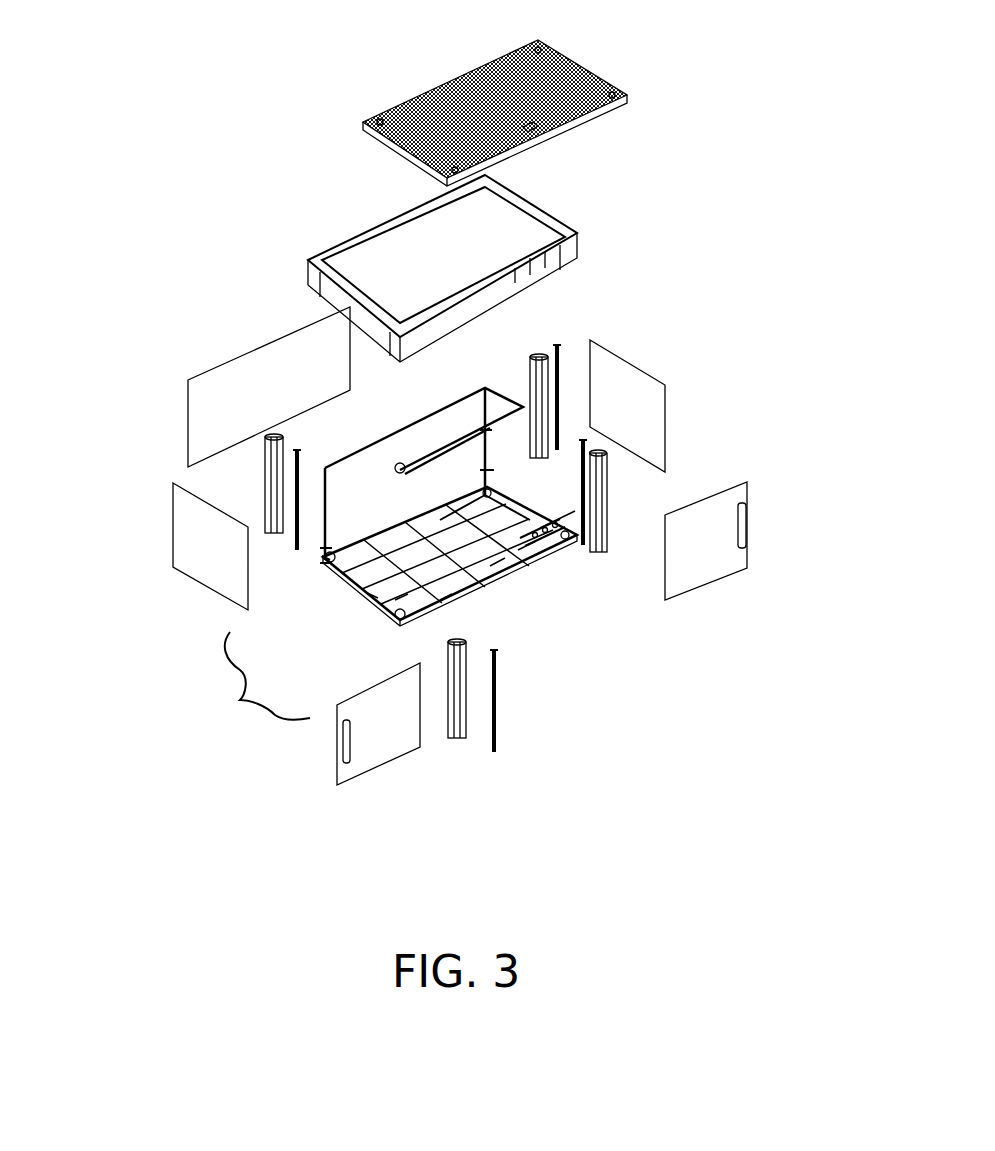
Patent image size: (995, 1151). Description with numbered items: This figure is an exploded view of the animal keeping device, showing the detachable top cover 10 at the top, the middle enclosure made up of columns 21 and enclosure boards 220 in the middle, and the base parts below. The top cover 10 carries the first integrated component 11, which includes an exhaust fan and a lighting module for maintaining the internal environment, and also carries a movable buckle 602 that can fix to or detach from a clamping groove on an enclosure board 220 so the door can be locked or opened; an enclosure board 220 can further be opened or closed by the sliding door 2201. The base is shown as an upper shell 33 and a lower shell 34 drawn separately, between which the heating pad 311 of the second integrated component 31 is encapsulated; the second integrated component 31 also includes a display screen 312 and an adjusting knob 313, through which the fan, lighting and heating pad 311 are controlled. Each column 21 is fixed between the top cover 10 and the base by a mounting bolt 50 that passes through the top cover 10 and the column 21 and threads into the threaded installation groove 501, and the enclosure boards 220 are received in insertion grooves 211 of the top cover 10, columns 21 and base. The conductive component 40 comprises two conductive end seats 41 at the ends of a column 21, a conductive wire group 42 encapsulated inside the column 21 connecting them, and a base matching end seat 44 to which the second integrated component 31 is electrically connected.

The top cover 10 is at (590, 63).
The movable buckle 602 is at (548, 136).
The upper shell of base 33 is at (570, 202).
The first integrated component 11 is at (437, 450).
The second integrated component 31 is at (647, 598).
The heating pad 311 is at (545, 545).
The display screen 312 is at (495, 580).
The adjusting knob 313 is at (530, 560).
The insertion groove 211 is at (443, 603).
The lower shell of base 34 is at (370, 597).
The threaded installation groove 501 is at (400, 600).
The conductive component 40 is at (265, 682).
The conductive end seat 41 is at (327, 563).
The conductive wire group 42 is at (323, 542).
The base matching end seat 44 is at (325, 560).
The enclosure board 220 is at (190, 405).
The sliding door 2201 is at (335, 752).
The column 21 is at (465, 740).
The mounting bolt 50 is at (498, 728).